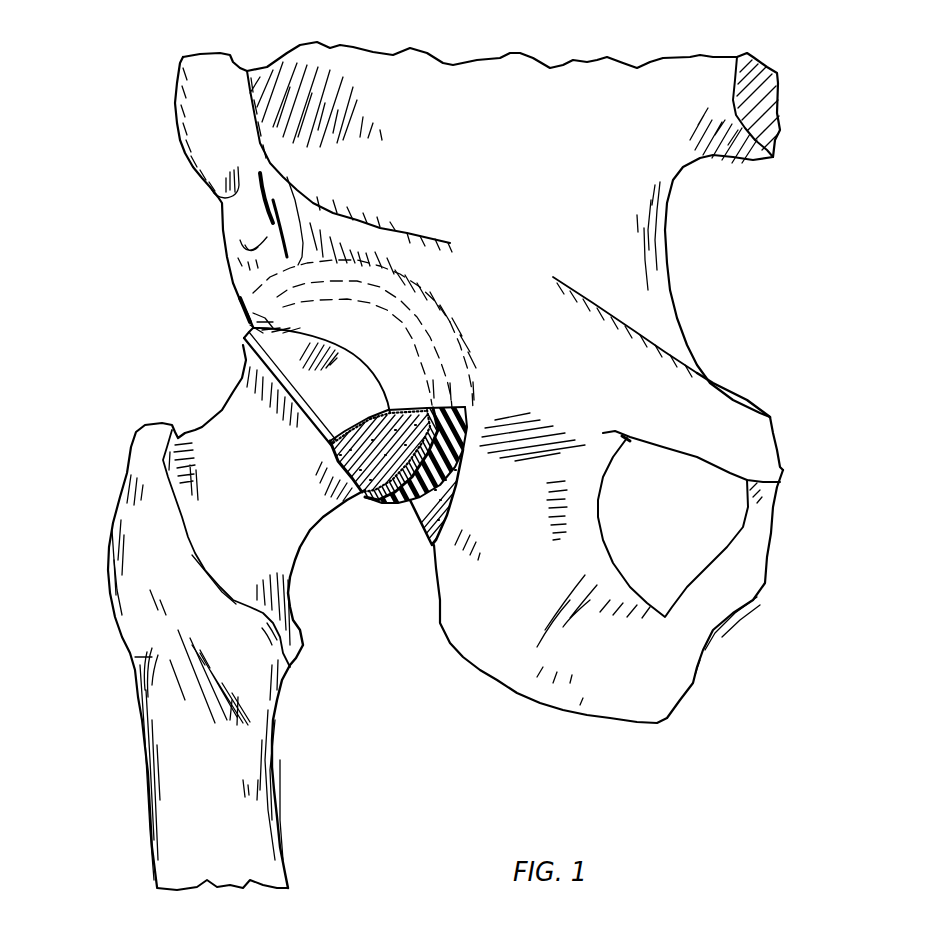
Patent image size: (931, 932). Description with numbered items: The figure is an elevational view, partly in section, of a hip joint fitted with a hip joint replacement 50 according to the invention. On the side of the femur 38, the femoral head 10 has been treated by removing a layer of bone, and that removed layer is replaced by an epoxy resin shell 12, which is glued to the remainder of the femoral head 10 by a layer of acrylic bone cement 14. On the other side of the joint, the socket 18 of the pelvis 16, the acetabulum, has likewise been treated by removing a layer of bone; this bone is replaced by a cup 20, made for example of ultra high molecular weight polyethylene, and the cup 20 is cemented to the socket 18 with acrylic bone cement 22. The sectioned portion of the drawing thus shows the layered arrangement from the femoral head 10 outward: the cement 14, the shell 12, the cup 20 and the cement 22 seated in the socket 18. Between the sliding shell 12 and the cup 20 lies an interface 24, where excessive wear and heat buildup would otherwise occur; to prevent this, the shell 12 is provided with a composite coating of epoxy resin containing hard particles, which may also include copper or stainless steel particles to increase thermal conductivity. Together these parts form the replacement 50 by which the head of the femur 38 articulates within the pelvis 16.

The femoral head 10 is at (337, 505).
The epoxy resin shell 12 is at (390, 498).
The acrylic bone cement 14 is at (369, 491).
The pelvis 16 is at (347, 190).
The socket 18 is at (408, 505).
The cup 20 is at (452, 527).
The acrylic bone cement 22 is at (422, 513).
The interface 24 is at (402, 503).
The femur 38 is at (158, 722).
The hip joint replacement 50 is at (222, 339).